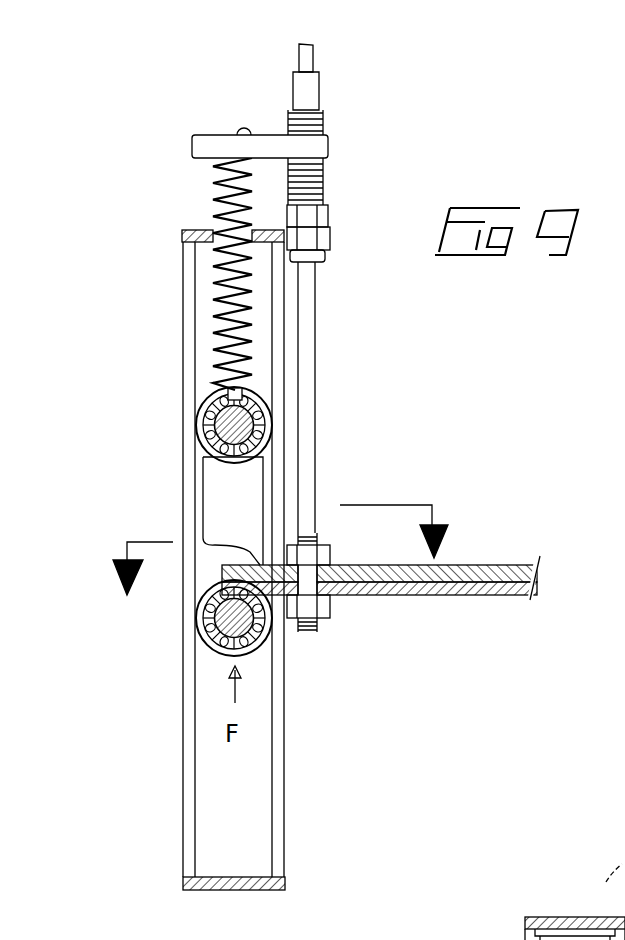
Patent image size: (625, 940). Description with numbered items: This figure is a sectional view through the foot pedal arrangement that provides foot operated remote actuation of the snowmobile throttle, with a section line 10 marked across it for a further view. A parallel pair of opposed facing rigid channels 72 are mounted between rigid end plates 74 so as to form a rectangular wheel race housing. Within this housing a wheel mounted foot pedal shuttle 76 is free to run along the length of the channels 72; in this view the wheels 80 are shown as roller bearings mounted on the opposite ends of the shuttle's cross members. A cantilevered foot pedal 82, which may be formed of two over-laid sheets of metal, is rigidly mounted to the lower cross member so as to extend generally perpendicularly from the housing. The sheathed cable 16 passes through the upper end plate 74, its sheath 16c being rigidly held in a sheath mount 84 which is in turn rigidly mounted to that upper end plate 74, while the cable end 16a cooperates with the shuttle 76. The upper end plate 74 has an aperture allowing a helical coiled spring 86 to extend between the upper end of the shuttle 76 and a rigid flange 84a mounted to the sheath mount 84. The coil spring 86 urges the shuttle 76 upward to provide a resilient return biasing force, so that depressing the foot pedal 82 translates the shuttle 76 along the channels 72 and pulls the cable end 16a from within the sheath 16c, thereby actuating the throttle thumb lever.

The section line 10- 10 is at (270, 555).
The sheathed cable 16 is at (313, 45).
The cable end 16a is at (315, 420).
The sheath 16c is at (322, 90).
The rigid channels 72 is at (184, 762).
The rigid end plates 74 is at (200, 232).
The foot pedal shuttle 76 is at (214, 495).
The wheels 80 is at (204, 390).
The foot pedal 82 is at (485, 595).
The sheath mount 84 is at (335, 160).
The rigid flange 84a is at (222, 134).
The helical coiled spring 86 is at (214, 192).